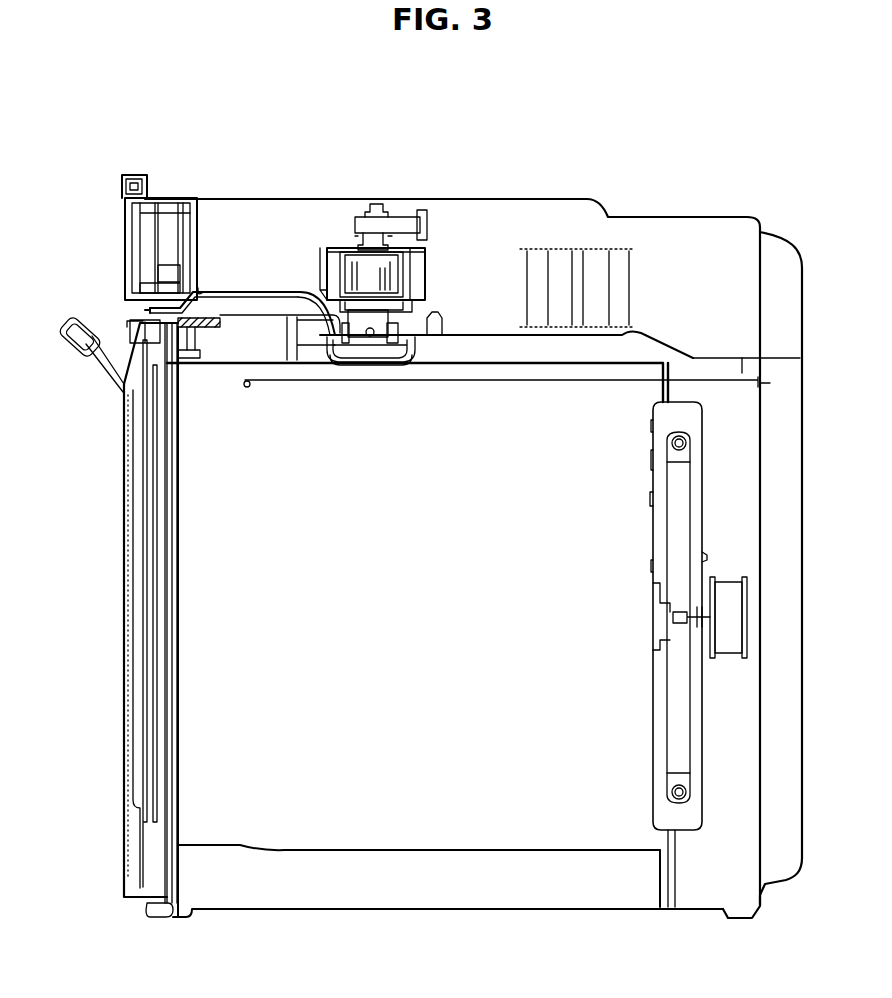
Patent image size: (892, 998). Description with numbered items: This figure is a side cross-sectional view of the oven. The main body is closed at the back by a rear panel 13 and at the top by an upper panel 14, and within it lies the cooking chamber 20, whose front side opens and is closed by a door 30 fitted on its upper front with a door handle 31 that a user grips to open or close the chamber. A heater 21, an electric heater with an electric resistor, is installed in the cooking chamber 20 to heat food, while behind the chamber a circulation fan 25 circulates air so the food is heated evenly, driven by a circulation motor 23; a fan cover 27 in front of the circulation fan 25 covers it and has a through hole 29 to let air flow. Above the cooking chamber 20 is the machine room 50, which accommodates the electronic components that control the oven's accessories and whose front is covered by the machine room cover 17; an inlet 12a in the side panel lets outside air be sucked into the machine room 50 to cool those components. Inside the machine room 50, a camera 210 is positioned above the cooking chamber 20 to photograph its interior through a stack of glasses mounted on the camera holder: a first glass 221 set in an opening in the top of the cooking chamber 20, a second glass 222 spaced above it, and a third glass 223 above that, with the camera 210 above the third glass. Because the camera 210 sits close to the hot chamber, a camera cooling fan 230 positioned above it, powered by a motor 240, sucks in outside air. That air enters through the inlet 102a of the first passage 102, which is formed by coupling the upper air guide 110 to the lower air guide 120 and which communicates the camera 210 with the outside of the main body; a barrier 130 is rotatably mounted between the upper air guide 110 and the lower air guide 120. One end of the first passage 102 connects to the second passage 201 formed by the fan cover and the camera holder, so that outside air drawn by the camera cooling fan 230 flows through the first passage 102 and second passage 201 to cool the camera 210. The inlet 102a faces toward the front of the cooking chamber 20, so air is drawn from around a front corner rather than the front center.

The rear panel 13 is at (802, 567).
The upper panel 14 is at (437, 199).
The inlet 12a is at (609, 254).
The machine room cover 17 is at (126, 222).
The cooking chamber 20 is at (421, 635).
The heater 21 is at (266, 386).
The circulation motor 23 is at (738, 642).
The circulation fan 25 is at (676, 497).
The fan cover 27 is at (656, 498).
The through hole 29 is at (656, 566).
The door 30 is at (115, 521).
The door handle 31 is at (62, 342).
The machine room 50 is at (458, 246).
The first passage 102 is at (220, 300).
The inlet of the first passage 102a is at (148, 310).
The upper air guide 110 is at (245, 276).
The lower air guide 120 is at (239, 330).
The barrier 130 is at (195, 358).
The second passage 201 is at (303, 298).
The camera 210 is at (372, 322).
The first glass 221 is at (390, 367).
The second glass 222 is at (372, 367).
The third glass 223 is at (360, 365).
The camera cooling fan 230 is at (345, 250).
The motor 240 is at (385, 212).